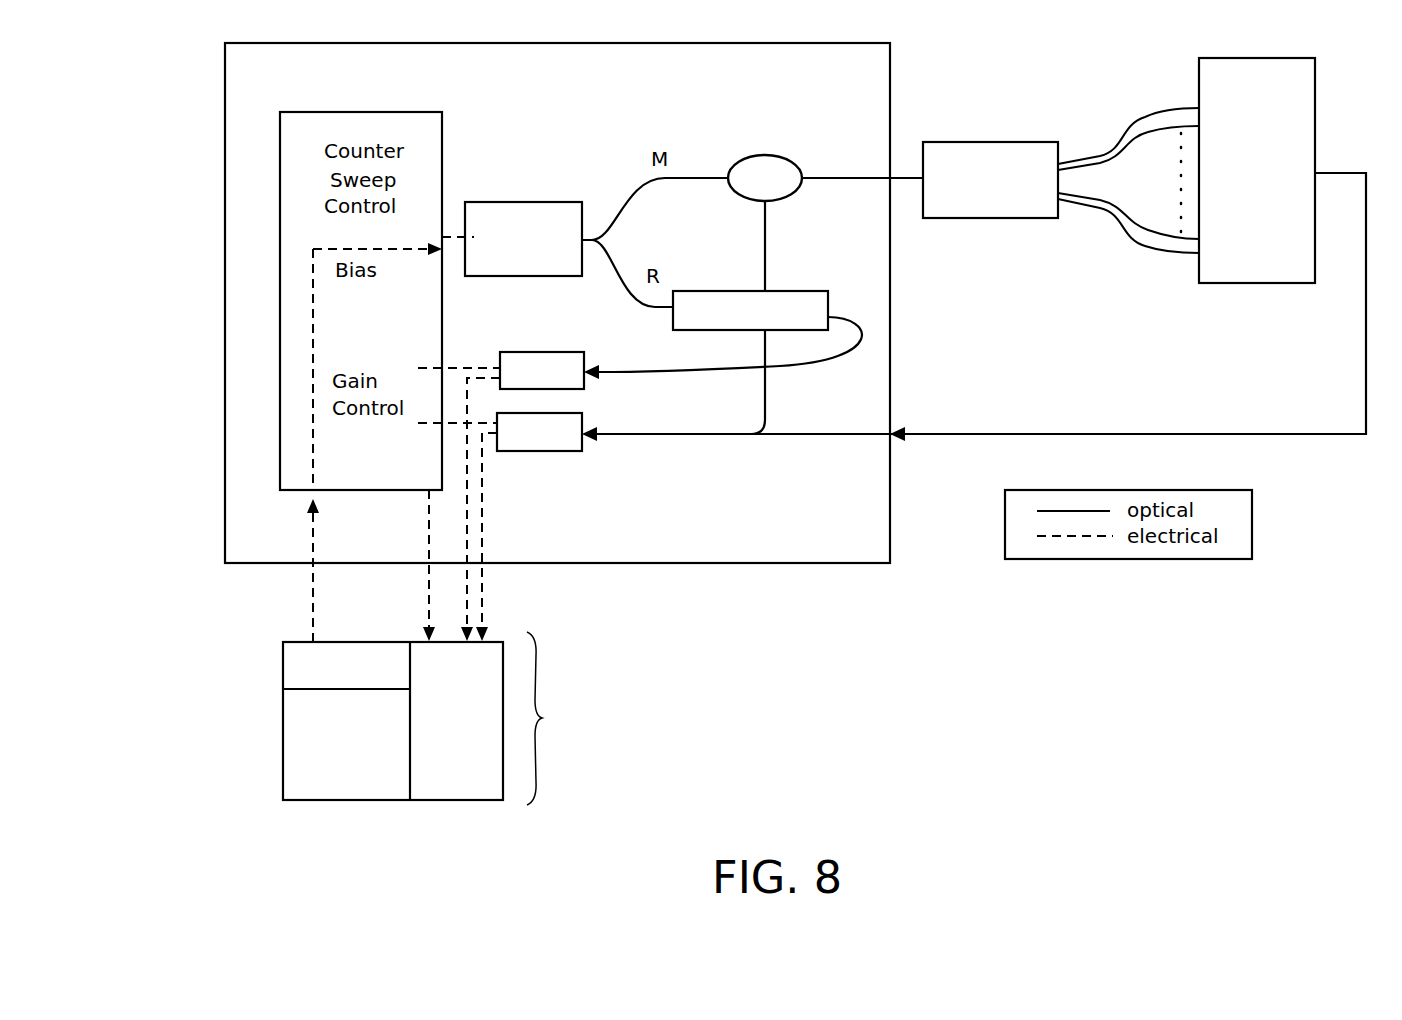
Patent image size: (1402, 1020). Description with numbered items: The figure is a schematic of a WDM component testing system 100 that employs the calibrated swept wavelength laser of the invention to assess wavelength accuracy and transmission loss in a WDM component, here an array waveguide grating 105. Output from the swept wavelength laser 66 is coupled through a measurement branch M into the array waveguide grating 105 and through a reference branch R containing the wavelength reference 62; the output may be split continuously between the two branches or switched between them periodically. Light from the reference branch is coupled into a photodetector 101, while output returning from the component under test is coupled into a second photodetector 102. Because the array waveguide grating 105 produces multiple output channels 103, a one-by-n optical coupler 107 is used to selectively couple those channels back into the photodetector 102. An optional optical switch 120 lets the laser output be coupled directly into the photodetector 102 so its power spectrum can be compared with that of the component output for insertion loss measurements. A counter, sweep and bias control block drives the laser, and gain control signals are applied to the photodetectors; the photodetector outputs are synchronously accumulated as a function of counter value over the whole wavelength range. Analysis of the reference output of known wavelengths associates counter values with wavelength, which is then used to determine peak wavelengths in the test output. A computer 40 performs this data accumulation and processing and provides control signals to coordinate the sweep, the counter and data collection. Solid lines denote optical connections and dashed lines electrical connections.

The testing system 100 is at (186, 122).
The swept wavelength laser 66 is at (562, 215).
The optical switch 120 is at (773, 172).
The wavelength reference 62 is at (815, 302).
The photodetector 101 is at (545, 363).
The photodetector 102 is at (558, 437).
The array waveguide grating 105 is at (995, 205).
The output channels 103 is at (1128, 165).
The 1×n optical coupler 107 is at (1300, 115).
The computer 40 is at (333, 777).